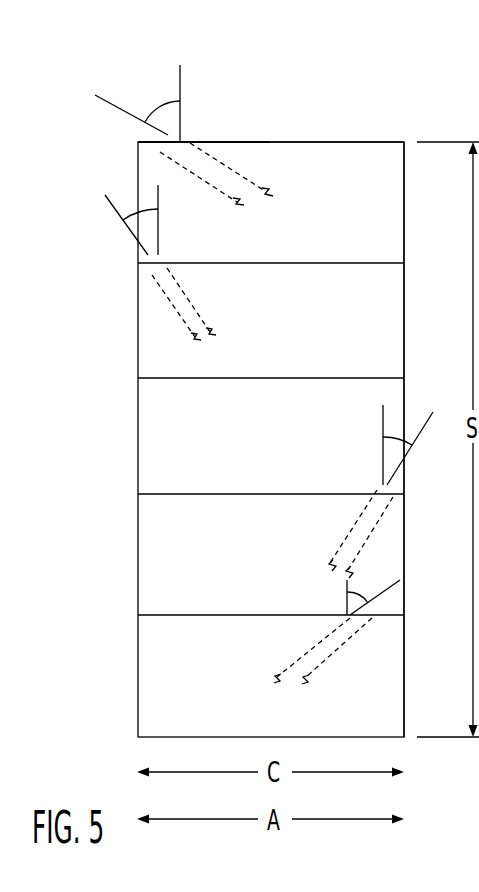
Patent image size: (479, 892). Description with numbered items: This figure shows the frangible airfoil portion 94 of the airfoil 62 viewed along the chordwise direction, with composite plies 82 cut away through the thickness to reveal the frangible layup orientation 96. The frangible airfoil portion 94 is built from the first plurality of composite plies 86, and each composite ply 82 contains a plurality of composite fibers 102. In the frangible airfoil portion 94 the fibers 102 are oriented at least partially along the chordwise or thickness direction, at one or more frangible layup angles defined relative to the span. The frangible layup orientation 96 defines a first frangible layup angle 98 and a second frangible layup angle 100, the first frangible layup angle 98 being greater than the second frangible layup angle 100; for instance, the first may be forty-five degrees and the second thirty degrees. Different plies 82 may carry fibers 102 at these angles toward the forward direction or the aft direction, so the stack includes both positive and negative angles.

The composite ply panel 62 is at (284, 112).
The composite ply 82 is at (149, 454).
The first plurality of composite plies 86 is at (112, 653).
The frangible airfoil portion 94 is at (213, 116).
The frangible layup orientation 96 is at (388, 114).
The first frangible layup angle 98 is at (152, 101).
The second frangible layup angle 100 is at (130, 219).
The fibers 102 is at (248, 177).